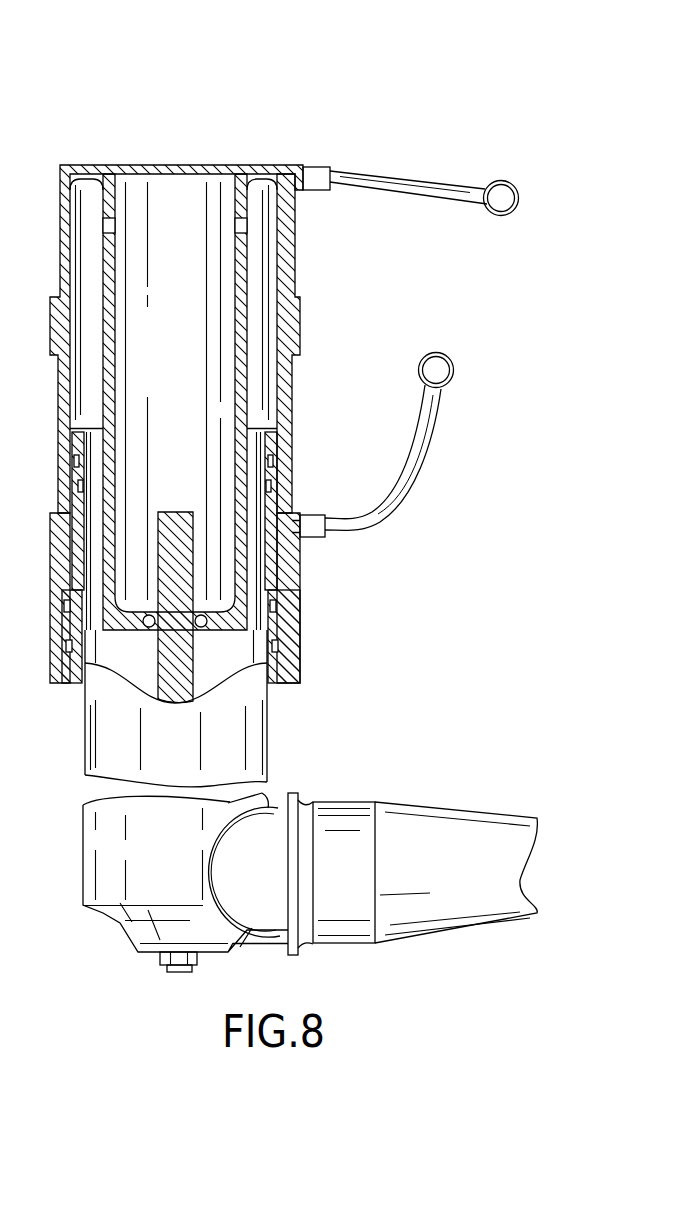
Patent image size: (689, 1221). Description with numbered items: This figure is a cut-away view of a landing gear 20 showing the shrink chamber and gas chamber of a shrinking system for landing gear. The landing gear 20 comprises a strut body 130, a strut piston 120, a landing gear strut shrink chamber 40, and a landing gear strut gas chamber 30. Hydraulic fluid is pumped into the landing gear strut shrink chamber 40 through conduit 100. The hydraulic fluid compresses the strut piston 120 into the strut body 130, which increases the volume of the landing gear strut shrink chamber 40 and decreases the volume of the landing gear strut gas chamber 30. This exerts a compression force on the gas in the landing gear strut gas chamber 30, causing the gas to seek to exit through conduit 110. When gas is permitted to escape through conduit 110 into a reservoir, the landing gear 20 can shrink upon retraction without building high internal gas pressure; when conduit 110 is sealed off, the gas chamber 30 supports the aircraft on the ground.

The landing gear 20 is at (296, 108).
The landing gear strut gas chamber 30 is at (262, 372).
The landing gear strut shrink chamber 40 is at (273, 563).
The conduit 100 is at (450, 382).
The conduit 110 is at (506, 216).
The strut piston 120 is at (240, 735).
The strut body 130 is at (297, 670).